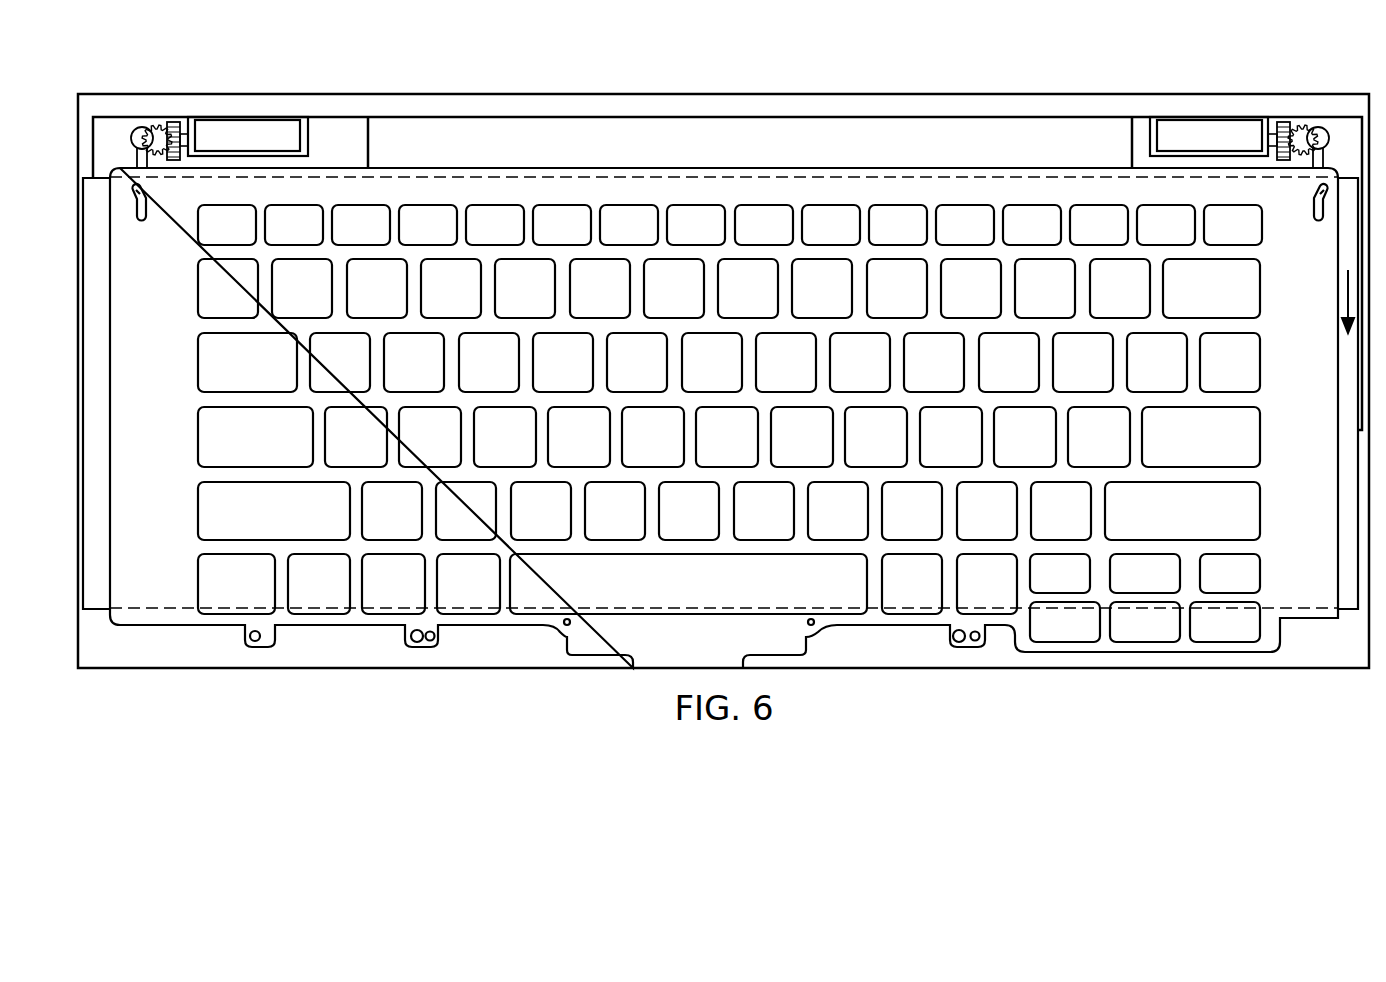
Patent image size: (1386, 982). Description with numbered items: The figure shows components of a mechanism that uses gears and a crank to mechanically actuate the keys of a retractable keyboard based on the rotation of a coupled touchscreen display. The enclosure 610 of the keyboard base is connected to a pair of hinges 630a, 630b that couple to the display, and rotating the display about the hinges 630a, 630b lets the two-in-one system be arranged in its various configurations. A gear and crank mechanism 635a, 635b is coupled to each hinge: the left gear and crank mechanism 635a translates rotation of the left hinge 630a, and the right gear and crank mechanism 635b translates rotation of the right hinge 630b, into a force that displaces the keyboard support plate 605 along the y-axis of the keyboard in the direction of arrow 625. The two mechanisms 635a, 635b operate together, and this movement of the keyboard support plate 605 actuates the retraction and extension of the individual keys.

The keyboard support plate 605 is at (107, 397).
The enclosure 610 is at (638, 125).
The arrow 625 is at (1347, 292).
The left hinge 630a is at (262, 125).
The right hinge 630b is at (1195, 125).
The left gear and crank mechanism 635a is at (180, 127).
The right gear and crank mechanism 635b is at (1330, 127).